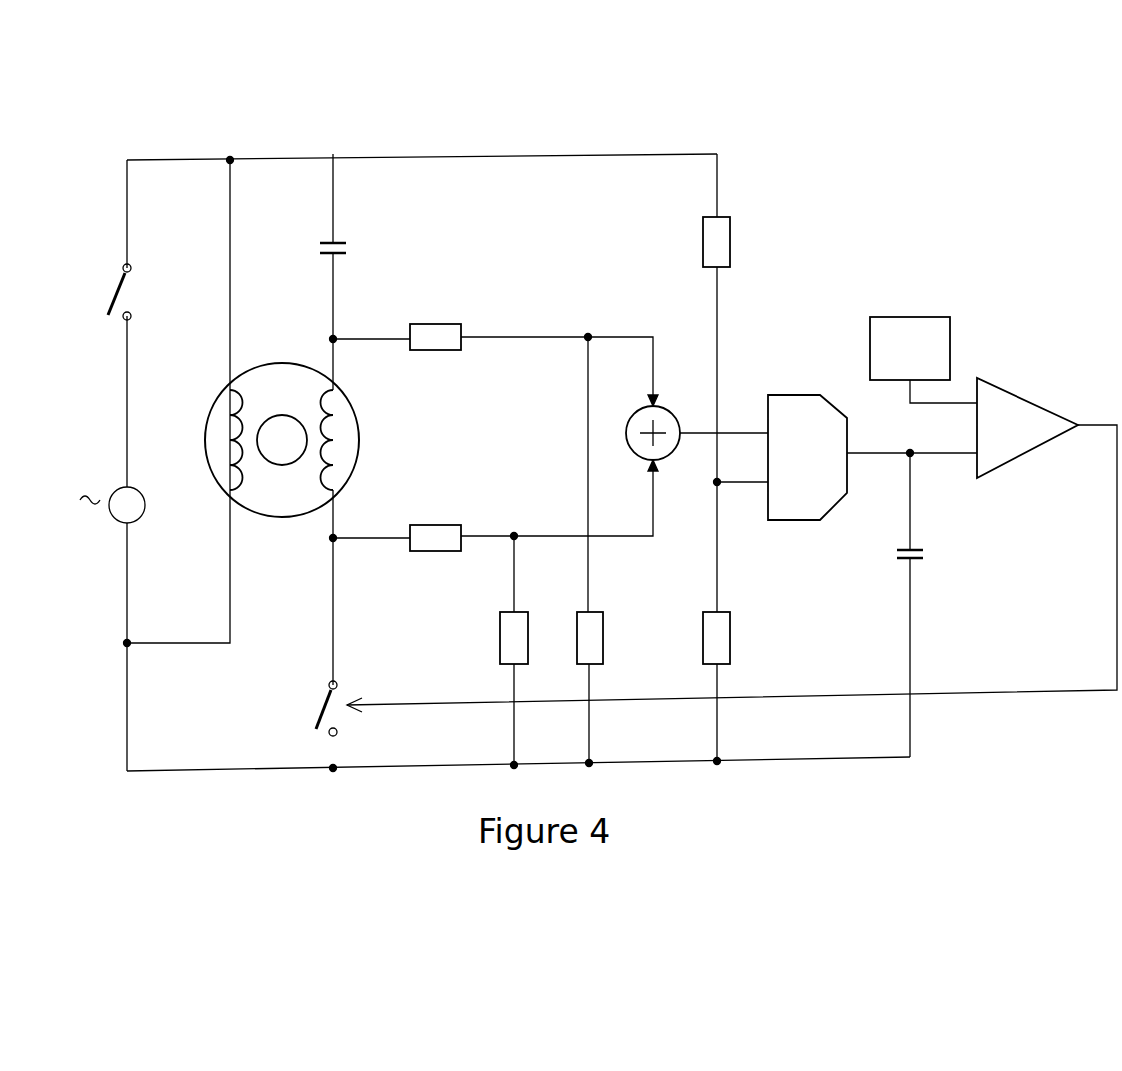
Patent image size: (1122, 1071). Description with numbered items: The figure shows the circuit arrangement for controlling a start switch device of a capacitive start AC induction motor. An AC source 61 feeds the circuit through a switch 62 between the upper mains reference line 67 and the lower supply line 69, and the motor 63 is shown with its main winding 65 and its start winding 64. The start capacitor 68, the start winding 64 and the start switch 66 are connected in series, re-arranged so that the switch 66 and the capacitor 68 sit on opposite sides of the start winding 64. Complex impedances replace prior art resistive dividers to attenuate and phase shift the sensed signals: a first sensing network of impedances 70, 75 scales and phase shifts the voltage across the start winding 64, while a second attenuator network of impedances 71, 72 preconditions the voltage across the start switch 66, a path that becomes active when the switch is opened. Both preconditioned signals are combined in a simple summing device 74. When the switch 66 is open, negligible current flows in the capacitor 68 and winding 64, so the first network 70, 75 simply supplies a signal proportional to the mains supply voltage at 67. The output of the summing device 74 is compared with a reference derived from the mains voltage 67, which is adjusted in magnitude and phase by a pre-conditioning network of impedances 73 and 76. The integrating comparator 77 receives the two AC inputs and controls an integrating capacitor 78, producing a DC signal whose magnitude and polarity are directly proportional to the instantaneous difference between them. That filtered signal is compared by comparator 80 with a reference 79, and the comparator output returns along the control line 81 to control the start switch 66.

The AC power source 61 is at (112, 532).
The power switch 62 is at (112, 292).
The motor 63 is at (276, 363).
The start winding 64 is at (336, 420).
The motor winding 65 is at (232, 402).
The start switch 66 is at (318, 704).
The mains reference 67 is at (443, 154).
The start capacitor 68 is at (348, 240).
The lower supply line 69 is at (390, 770).
The complex impedance 70 is at (438, 322).
The complex impedance 71 is at (437, 524).
The complex impedance 72 is at (497, 638).
The complex impedance 73 is at (732, 246).
The summing device 74 is at (664, 408).
The complex impedance 75 is at (604, 636).
The complex impedance 76 is at (732, 636).
The integrating comparator 77 is at (794, 522).
The integrating capacitor 78 is at (925, 556).
The reference 79 is at (910, 315).
The comparator 80 is at (1020, 395).
The feedback control line 81 is at (995, 700).